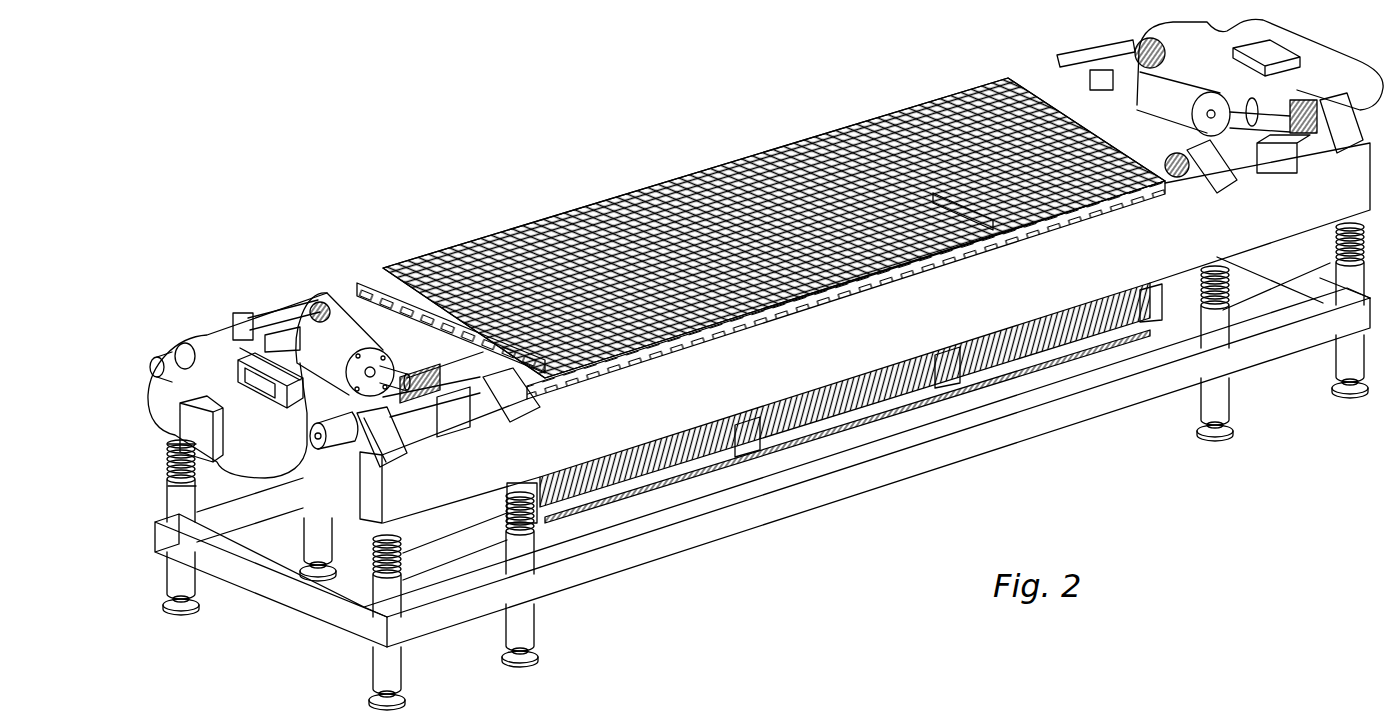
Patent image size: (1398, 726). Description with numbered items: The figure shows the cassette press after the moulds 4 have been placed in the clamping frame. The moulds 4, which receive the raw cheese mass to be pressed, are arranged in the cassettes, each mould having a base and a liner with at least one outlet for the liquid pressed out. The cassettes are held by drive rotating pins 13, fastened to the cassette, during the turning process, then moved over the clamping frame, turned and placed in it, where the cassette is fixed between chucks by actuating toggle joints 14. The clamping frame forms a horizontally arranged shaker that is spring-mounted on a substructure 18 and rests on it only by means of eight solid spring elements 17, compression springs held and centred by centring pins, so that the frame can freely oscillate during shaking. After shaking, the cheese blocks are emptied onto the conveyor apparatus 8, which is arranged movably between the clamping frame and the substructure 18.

The mould 4 is at (627, 187).
The conveyor apparatus 8 is at (673, 493).
The drive rotating pin 13 is at (370, 600).
The toggle joint 14 is at (281, 313).
The spring element 17 is at (197, 467).
The substructure 18 is at (634, 567).